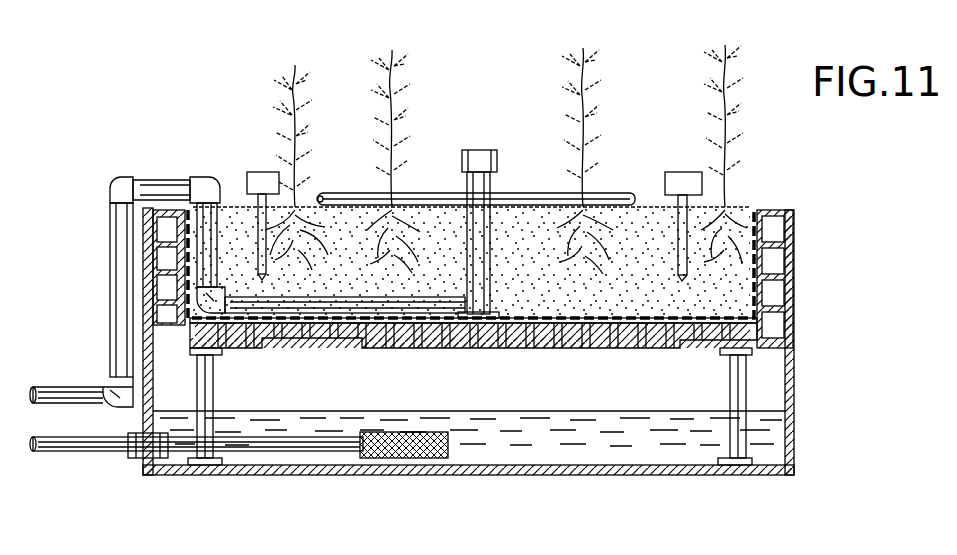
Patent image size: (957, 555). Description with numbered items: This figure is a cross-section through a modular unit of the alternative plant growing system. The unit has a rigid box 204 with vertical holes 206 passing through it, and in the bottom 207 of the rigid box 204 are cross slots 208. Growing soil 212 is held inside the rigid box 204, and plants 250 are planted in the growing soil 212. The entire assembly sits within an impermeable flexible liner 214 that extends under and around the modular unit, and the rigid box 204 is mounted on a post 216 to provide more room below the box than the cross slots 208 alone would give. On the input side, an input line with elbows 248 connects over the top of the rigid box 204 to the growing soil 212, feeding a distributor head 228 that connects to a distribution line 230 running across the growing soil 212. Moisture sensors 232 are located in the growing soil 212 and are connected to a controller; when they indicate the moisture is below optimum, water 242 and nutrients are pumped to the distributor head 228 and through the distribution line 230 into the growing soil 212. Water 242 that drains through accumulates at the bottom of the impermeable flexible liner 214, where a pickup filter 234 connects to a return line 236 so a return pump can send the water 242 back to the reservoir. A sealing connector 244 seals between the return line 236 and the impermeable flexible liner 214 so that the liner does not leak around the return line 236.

The rigid box 204 is at (760, 262).
The vertical holes 206 is at (543, 352).
The bottom 207 is at (415, 352).
The cross slots 208 is at (296, 348).
The growing soil 212 is at (735, 297).
The impermeable flexible liner 214 is at (793, 365).
The post 216 is at (743, 390).
The distributor heads 228 is at (484, 150).
The distribution lines 230 is at (440, 193).
The moisture sensors 232 is at (250, 172).
The pickup filter 234 is at (408, 458).
The return line 236 is at (277, 445).
The water 242 is at (583, 444).
The sealing connector 244 is at (132, 458).
The elbows 248 is at (205, 178).
The plants 250 is at (385, 60).